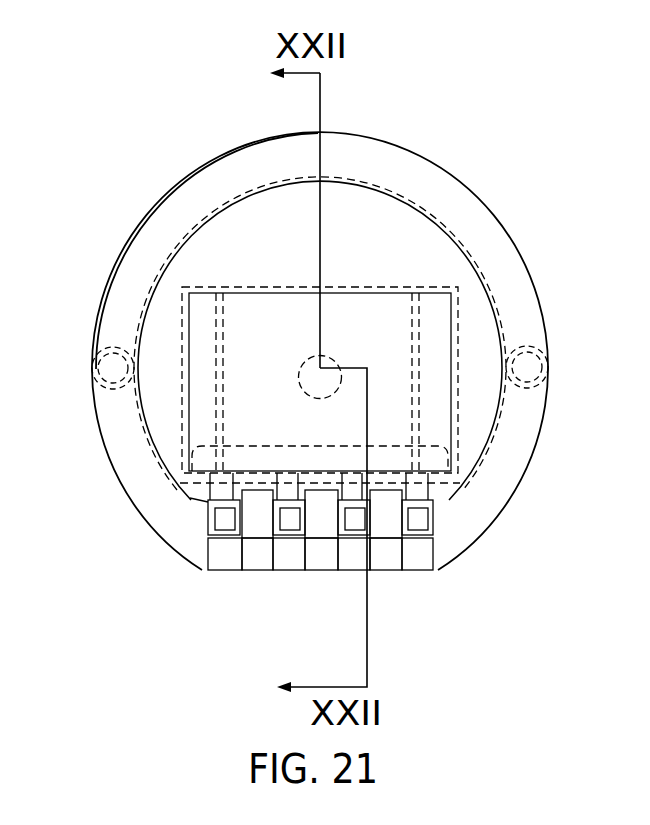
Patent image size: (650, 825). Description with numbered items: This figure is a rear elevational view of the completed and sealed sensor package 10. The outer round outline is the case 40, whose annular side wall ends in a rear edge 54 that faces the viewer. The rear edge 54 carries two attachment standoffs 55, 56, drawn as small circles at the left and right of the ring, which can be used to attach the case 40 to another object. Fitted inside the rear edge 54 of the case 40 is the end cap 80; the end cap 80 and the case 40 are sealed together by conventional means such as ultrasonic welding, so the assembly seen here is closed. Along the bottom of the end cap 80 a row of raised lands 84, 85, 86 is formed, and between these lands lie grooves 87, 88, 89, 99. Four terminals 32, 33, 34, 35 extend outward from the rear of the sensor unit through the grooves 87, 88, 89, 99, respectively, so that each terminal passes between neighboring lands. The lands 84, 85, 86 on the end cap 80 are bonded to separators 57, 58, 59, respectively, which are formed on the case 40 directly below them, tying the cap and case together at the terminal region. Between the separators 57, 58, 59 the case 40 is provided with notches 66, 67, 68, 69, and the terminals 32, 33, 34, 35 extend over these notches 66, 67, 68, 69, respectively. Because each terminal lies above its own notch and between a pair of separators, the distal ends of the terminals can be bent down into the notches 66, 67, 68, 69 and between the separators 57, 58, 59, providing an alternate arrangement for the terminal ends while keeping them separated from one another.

The sensor package 10 is at (406, 145).
The case 40 is at (179, 196).
The rear edge 54 is at (493, 238).
The end cap 80 is at (414, 246).
The attachment standoff 55 is at (106, 364).
The attachment standoff 56 is at (536, 363).
The groove 99 is at (212, 513).
The land 86 is at (262, 512).
The land 85 is at (322, 515).
The land 84 is at (387, 512).
The groove 89 is at (293, 520).
The groove 88 is at (357, 520).
The groove 87 is at (431, 503).
The terminal 35 is at (223, 524).
The terminal 34 is at (291, 536).
The terminal 33 is at (356, 536).
The terminal 32 is at (428, 521).
The notch 66 is at (216, 548).
The separator 57 is at (248, 548).
The notch 67 is at (296, 548).
The separator 58 is at (318, 548).
The notch 68 is at (344, 548).
The separator 59 is at (388, 548).
The notch 69 is at (423, 560).